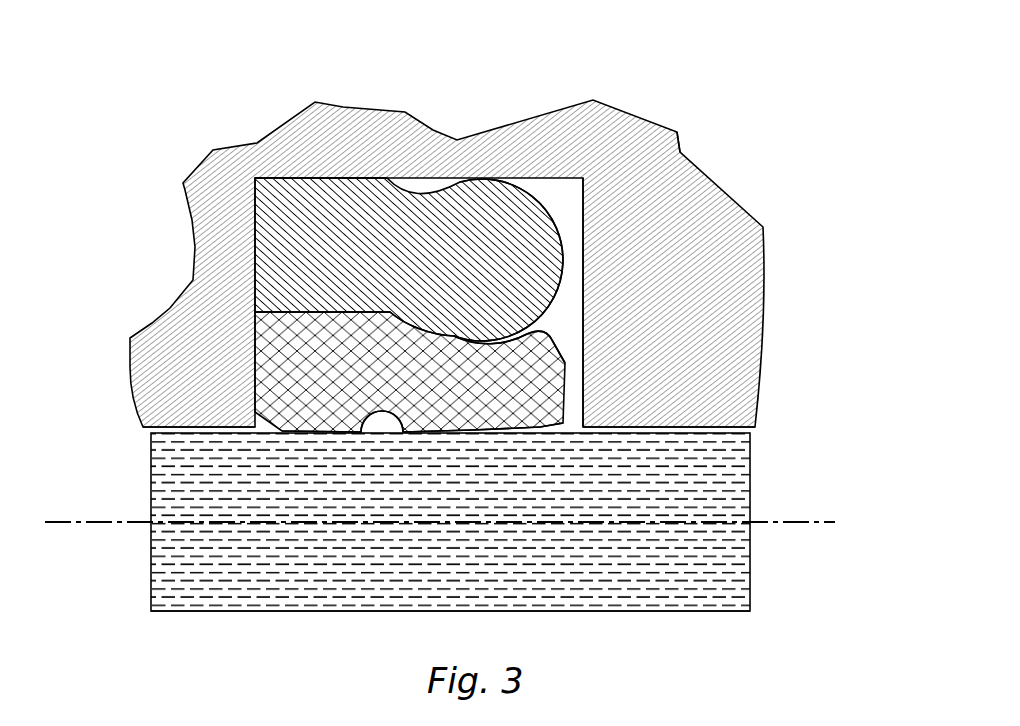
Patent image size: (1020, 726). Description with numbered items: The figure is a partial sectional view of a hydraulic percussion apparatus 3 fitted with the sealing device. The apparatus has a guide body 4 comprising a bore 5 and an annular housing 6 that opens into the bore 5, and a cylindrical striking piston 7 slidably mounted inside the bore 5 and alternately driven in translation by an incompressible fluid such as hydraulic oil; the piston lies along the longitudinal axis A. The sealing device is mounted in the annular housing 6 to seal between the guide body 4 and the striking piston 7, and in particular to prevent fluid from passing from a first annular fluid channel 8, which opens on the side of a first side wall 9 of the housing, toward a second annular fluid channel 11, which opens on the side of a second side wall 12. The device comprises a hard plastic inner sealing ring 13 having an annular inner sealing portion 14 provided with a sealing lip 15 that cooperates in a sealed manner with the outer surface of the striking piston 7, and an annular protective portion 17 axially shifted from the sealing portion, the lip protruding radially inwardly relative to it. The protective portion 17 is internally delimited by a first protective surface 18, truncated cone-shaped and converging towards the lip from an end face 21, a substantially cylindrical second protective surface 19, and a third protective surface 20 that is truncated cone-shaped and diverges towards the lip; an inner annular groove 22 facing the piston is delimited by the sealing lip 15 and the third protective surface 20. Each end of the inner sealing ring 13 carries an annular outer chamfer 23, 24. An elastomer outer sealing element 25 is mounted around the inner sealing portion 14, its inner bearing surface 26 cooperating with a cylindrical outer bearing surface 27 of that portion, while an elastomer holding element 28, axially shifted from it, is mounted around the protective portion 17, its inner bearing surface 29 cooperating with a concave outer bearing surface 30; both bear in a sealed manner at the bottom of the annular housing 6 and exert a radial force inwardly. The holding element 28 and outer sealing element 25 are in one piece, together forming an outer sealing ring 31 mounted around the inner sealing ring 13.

The hydraulic percussion apparatus 3 is at (522, 237).
The guide body 4 is at (735, 253).
The bore 5 is at (687, 433).
The annular housing 6 is at (551, 188).
The striking piston 7 is at (215, 583).
The first annular fluid channel 8 is at (749, 429).
The first side wall 9 is at (681, 152).
The second annular fluid channel 11 is at (151, 433).
The second side wall 12 is at (297, 213).
The inner sealing ring 13 is at (290, 360).
The inner sealing portion 14 is at (290, 385).
The sealing lip 15 is at (343, 431).
The protective portion 17 is at (585, 337).
The first protective surface 18 is at (543, 432).
The second protective surface 19 is at (453, 433).
The third protective surface 20 is at (397, 433).
The end face 21 is at (572, 390).
The inner annular groove 22 is at (378, 432).
The annular outer chamfer 23 is at (540, 333).
The annular outer chamfer 24 is at (328, 330).
The outer sealing element 25 is at (342, 180).
The inner bearing surface 26 is at (337, 353).
The outer bearing surface 27 is at (380, 305).
The holding element 28 is at (507, 222).
The inner bearing surface 29 is at (481, 353).
The outer bearing surface 30 is at (457, 330).
The outer sealing ring 31 is at (322, 213).
The longitudinal axis A is at (815, 522).